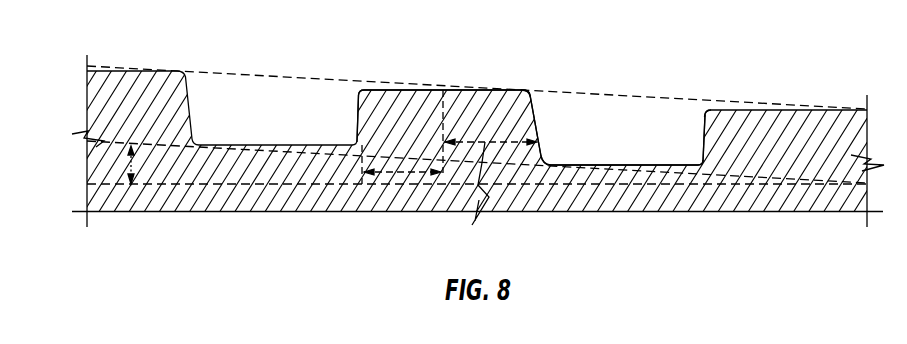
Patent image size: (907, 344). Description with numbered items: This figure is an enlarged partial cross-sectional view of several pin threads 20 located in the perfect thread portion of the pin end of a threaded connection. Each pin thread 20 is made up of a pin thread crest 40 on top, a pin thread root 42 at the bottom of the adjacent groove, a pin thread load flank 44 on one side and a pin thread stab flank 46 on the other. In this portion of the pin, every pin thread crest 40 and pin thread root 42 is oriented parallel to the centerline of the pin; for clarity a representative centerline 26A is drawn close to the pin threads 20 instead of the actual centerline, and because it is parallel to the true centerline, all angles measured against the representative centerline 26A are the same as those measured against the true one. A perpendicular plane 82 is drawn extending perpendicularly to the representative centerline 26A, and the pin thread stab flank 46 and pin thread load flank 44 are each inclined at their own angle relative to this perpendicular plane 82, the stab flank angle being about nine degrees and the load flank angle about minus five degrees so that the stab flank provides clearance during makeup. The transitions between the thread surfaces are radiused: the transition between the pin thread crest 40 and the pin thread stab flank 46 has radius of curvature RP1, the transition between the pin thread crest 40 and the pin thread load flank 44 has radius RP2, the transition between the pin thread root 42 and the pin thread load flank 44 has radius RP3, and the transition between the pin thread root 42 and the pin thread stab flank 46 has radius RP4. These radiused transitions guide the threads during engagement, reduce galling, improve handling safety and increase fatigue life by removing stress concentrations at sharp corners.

The pin thread 20 is at (461, 74).
The pin thread crest 40 is at (395, 88).
The perpendicular plane 82 is at (443, 102).
The radius of curvature RP1 is at (529, 90).
The radius of curvature RP2 is at (705, 110).
The radius of curvature RP3 is at (703, 167).
The radius of curvature RP4 is at (540, 165).
The pin thread load flank 44 is at (356, 117).
The pin thread stab flank 46 is at (538, 128).
The pin thread root 42 is at (637, 166).
The representative centerline 26A is at (283, 187).